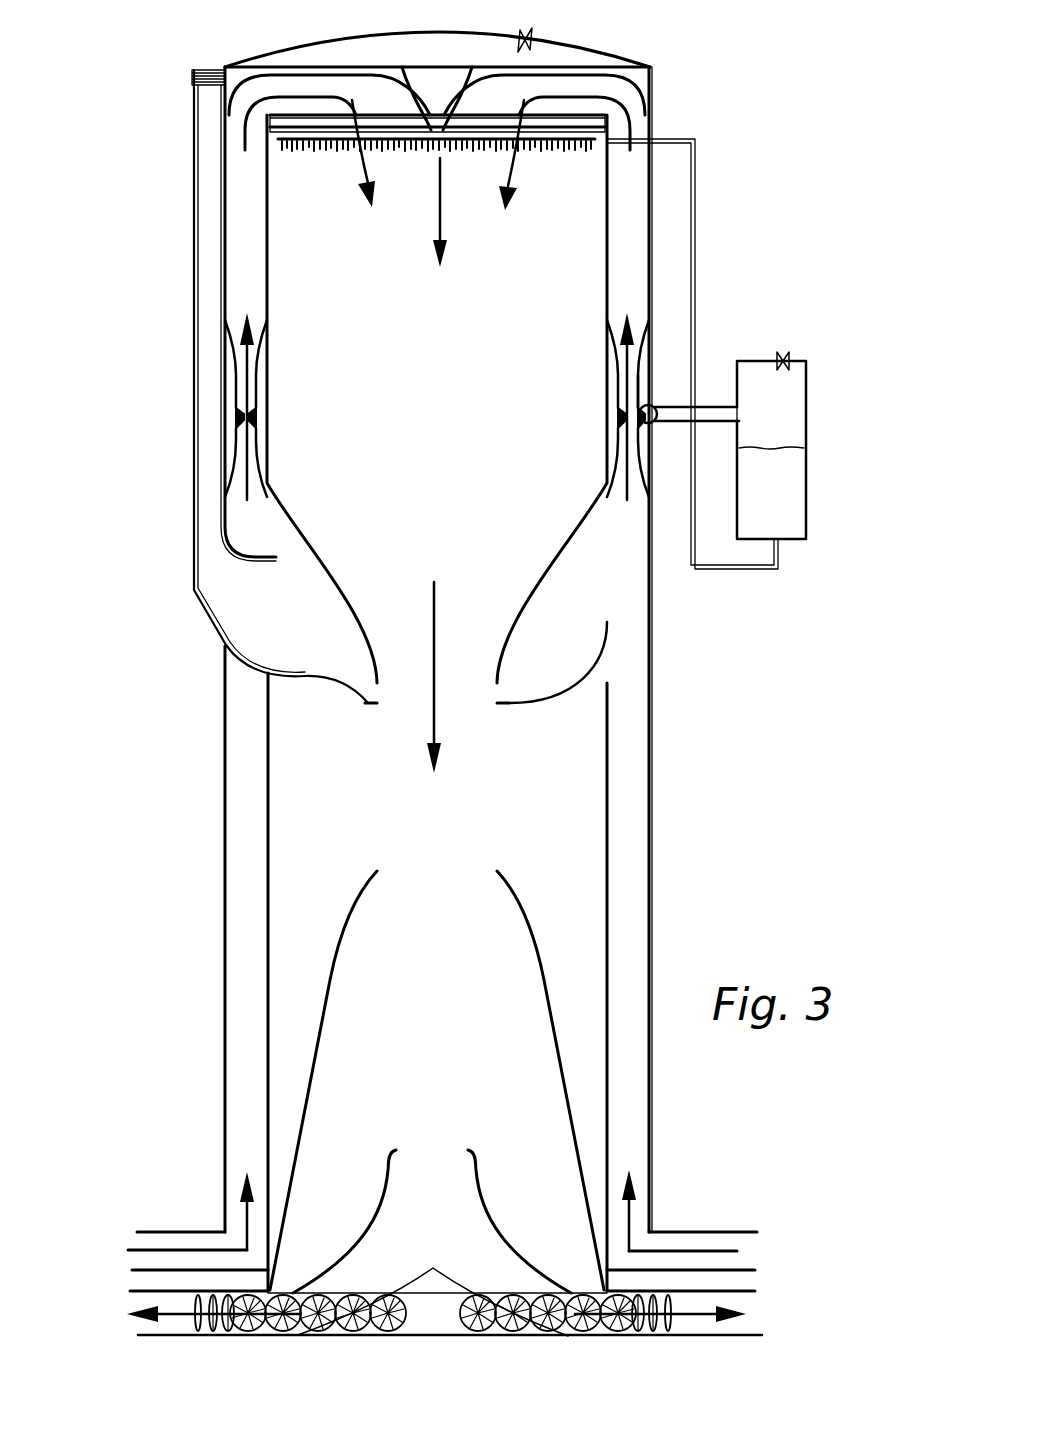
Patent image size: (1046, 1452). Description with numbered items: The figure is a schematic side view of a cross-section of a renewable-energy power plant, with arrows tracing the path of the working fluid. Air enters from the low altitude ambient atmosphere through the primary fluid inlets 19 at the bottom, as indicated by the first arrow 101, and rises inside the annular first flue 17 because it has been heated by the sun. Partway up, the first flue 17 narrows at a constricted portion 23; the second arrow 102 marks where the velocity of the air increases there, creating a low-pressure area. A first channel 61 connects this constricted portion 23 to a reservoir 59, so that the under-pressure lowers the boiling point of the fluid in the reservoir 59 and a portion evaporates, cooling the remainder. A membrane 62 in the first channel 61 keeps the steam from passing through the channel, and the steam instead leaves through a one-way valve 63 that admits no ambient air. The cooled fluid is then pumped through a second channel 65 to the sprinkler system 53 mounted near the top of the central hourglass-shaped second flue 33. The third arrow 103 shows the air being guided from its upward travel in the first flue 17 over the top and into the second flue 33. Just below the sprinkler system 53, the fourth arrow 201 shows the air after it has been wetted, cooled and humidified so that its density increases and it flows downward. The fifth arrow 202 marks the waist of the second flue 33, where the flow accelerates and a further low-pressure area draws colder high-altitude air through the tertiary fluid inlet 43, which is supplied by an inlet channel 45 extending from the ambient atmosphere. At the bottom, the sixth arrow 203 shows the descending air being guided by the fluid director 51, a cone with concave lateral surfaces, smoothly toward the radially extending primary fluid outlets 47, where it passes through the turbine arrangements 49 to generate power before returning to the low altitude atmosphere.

The first flue 17 is at (238, 988).
The primary fluid inlet 19 is at (136, 1240).
The constricted portion 23 is at (638, 364).
The second flue 33 is at (452, 496).
The tertiary fluid inlet 43 is at (376, 692).
The inlet channel 45 is at (212, 287).
The primary fluid outlet 47 is at (135, 1302).
The turbine arrangements 49 is at (587, 1337).
The fluid director 51 is at (440, 1283).
The sprinkler system 53 is at (325, 148).
The reservoir 59 is at (806, 498).
The first channel 61 is at (665, 405).
The membrane 62 is at (738, 405).
The one-way valve 63 is at (785, 360).
The second channel 65 is at (696, 209).
The first arrow 101 is at (172, 1248).
The second arrow 102 is at (645, 395).
The third arrow 103 is at (302, 93).
The fourth arrow 201 is at (440, 214).
The fifth arrow 202 is at (438, 653).
The sixth arrow 203 is at (470, 1158).